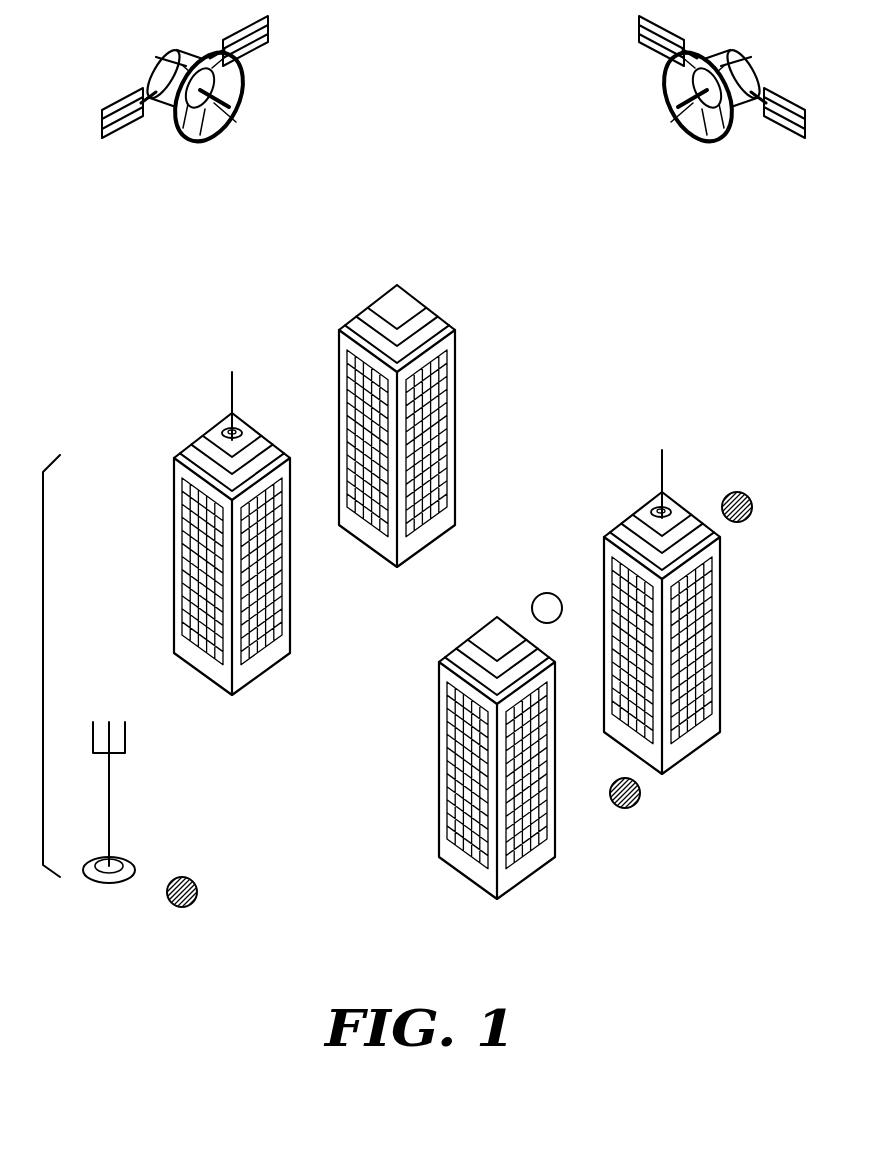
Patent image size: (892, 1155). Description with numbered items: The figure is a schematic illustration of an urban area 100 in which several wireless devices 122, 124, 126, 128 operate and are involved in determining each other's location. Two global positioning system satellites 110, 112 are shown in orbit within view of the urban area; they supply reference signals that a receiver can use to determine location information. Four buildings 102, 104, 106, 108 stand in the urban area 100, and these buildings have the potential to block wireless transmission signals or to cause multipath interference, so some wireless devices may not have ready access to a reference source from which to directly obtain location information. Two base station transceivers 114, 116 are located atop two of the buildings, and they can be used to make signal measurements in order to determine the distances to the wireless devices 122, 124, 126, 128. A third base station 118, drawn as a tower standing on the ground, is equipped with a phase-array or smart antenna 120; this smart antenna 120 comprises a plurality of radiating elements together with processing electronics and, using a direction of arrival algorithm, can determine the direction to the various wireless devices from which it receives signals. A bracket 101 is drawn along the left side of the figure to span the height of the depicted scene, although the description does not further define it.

The urban area 100 is at (373, 944).
The coverage area 101 is at (31, 666).
The building 102 is at (175, 470).
The building 104 is at (455, 377).
The building 106 is at (440, 678).
The building 108 is at (719, 633).
The GPS satellite 110 is at (218, 140).
The GPS satellite 112 is at (716, 136).
The base station transceiver 114 is at (234, 385).
The base station transceiver 116 is at (663, 462).
The third base station 118 is at (110, 797).
The smart antenna 120 is at (125, 741).
The wireless device 122 is at (536, 597).
The wireless device 124 is at (622, 808).
The wireless device 126 is at (752, 512).
The wireless device 128 is at (193, 881).